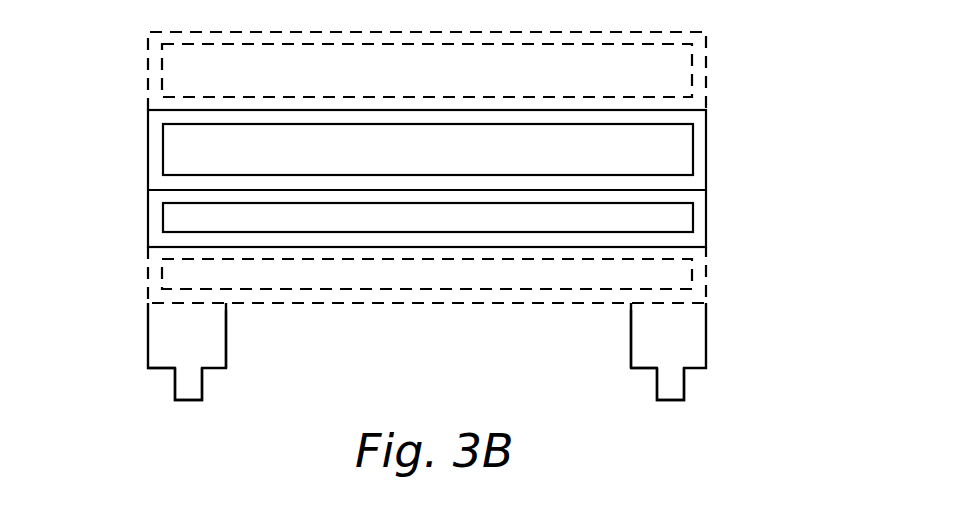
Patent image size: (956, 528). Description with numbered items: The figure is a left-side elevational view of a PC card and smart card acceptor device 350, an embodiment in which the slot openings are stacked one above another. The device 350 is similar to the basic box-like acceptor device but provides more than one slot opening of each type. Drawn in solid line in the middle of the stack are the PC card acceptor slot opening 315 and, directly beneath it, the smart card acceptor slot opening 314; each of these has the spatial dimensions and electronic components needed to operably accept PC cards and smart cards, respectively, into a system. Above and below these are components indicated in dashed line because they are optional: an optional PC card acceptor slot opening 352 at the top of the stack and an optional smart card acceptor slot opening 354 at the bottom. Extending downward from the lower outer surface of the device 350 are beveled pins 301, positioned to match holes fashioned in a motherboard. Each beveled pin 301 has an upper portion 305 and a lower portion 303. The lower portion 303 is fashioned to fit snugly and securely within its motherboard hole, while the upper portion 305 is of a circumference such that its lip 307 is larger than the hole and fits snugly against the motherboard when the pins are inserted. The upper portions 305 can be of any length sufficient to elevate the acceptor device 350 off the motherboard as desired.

The PC card and smart card acceptor device 350 is at (733, 160).
The optional PC card acceptor slot opening 352 is at (180, 70).
The PC card acceptor slot opening 315 is at (180, 148).
The smart card acceptor slot opening 314 is at (180, 218).
The optional smart card acceptor slot opening 354 is at (180, 272).
The beveled pin 301 is at (138, 329).
The upper portion 305 is at (226, 337).
The lip 307 is at (154, 371).
The lower portion 303 is at (204, 384).